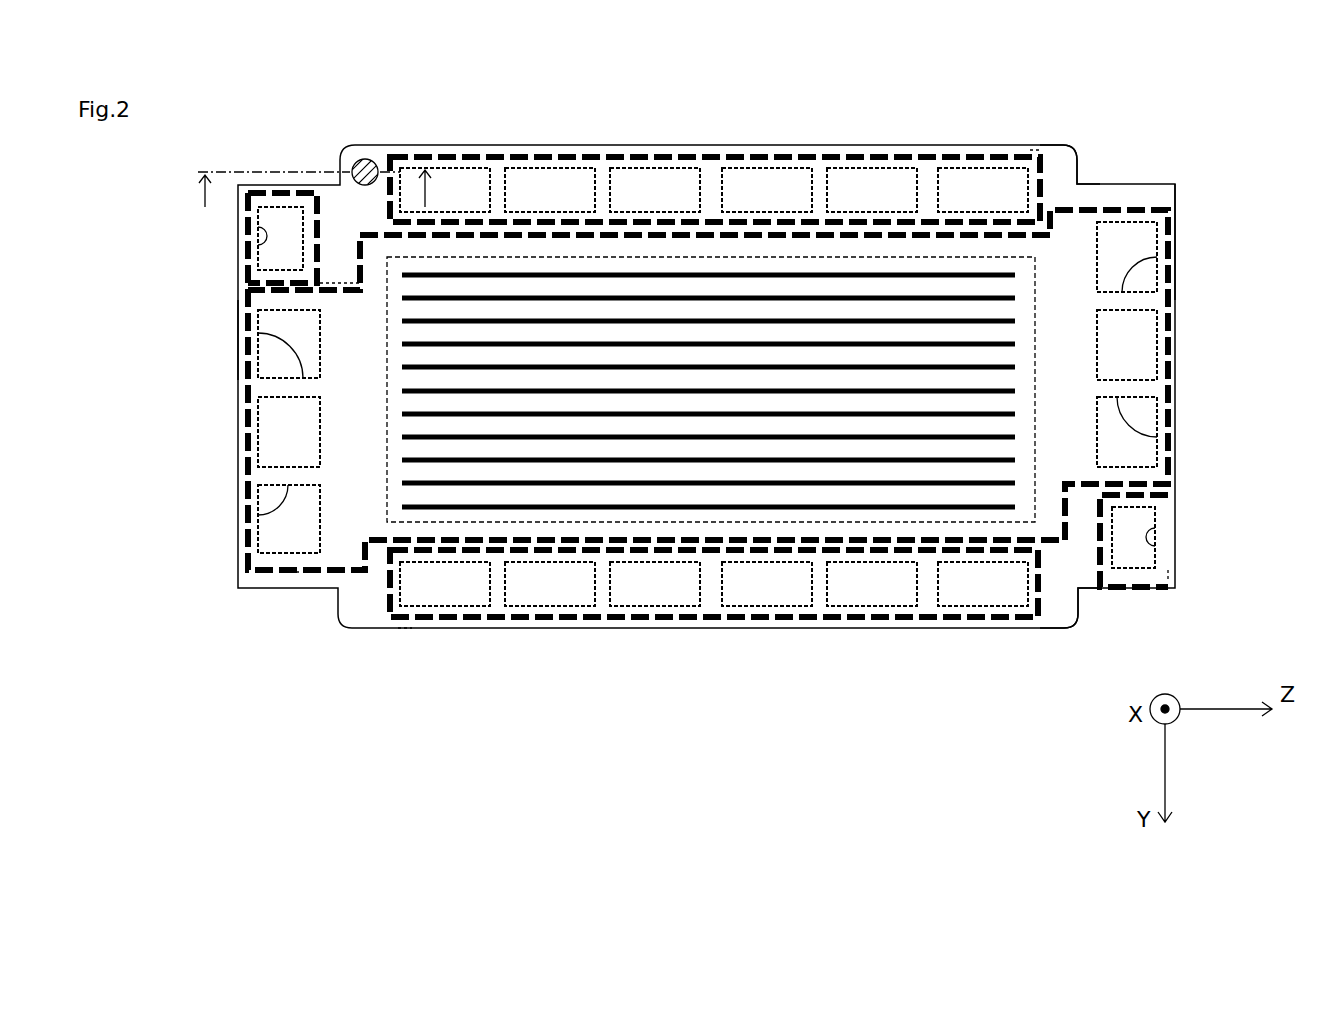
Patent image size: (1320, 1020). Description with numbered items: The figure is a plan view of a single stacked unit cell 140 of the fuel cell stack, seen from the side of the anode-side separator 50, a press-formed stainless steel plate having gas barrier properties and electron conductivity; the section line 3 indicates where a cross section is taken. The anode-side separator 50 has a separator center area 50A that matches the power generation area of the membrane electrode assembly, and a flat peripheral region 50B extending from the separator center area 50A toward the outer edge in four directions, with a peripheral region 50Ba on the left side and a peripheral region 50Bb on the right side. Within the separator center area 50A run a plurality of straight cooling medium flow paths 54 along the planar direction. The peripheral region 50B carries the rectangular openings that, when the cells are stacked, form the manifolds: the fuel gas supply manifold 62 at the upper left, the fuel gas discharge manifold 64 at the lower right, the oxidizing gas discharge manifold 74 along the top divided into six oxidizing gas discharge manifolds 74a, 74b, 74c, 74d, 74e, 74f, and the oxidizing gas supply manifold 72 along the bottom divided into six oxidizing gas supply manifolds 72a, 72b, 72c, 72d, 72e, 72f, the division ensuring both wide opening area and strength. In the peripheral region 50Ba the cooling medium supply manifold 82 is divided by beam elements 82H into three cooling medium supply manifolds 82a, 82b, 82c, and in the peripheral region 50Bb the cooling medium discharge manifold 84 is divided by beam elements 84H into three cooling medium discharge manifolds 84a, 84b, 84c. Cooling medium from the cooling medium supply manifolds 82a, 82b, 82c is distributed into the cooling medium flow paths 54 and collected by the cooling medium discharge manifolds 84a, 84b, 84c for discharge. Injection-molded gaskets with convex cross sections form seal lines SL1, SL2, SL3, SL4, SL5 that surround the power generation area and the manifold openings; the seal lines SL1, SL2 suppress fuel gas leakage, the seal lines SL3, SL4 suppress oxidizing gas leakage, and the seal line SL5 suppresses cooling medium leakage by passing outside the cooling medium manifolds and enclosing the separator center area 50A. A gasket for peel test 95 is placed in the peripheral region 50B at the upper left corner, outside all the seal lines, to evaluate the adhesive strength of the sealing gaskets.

The unit cell 140 is at (1182, 98).
The anode-side separator 50 is at (1140, 184).
The separator center area 50A is at (1030, 215).
The peripheral region 50B is at (1090, 582).
The peripheral region on the left side 50Ba is at (250, 337).
The peripheral region on the right side 50Bb is at (1178, 193).
The cooling medium flow paths 54 is at (413, 470).
The fuel gas supply manifold 62 is at (266, 237).
The fuel gas discharge manifold 64 is at (1160, 537).
The oxidizing gas supply manifold 72 is at (1020, 695).
The oxidizing gas supply manifold 72a is at (454, 607).
The oxidizing gas supply manifold 72b is at (560, 607).
The oxidizing gas supply manifold 72c is at (660, 607).
The oxidizing gas supply manifold 72d is at (770, 607).
The oxidizing gas supply manifold 72e is at (874, 607).
The oxidizing gas supply manifold 72f is at (990, 607).
The oxidizing gas discharge manifold 74 is at (1030, 88).
The oxidizing gas discharge manifold 74a is at (977, 168).
The oxidizing gas discharge manifold 74b is at (862, 168).
The oxidizing gas discharge manifold 74c is at (757, 168).
The oxidizing gas discharge manifold 74d is at (652, 168).
The oxidizing gas discharge manifold 74e is at (540, 168).
The oxidizing gas discharge manifold 74f is at (440, 168).
The cooling medium supply manifold 82 is at (168, 345).
The cooling medium supply manifold 82a is at (270, 368).
The cooling medium supply manifold 82b is at (270, 417).
The cooling medium supply manifold 82c is at (280, 500).
The beam elements 82H is at (264, 332).
The cooling medium discharge manifold 84 is at (1265, 258).
The cooling medium discharge manifold 84a is at (1140, 415).
The cooling medium discharge manifold 84b is at (1140, 345).
The cooling medium discharge manifold 84c is at (1140, 272).
The beam elements 84H is at (1130, 282).
The gasket for peel test 95 is at (367, 158).
The section line 3 is at (313, 191).
The seal line SL1 is at (250, 270).
The seal line SL2 is at (1170, 575).
The seal line SL3 is at (405, 628).
The seal line SL4 is at (1030, 155).
The seal line SL5 is at (294, 575).